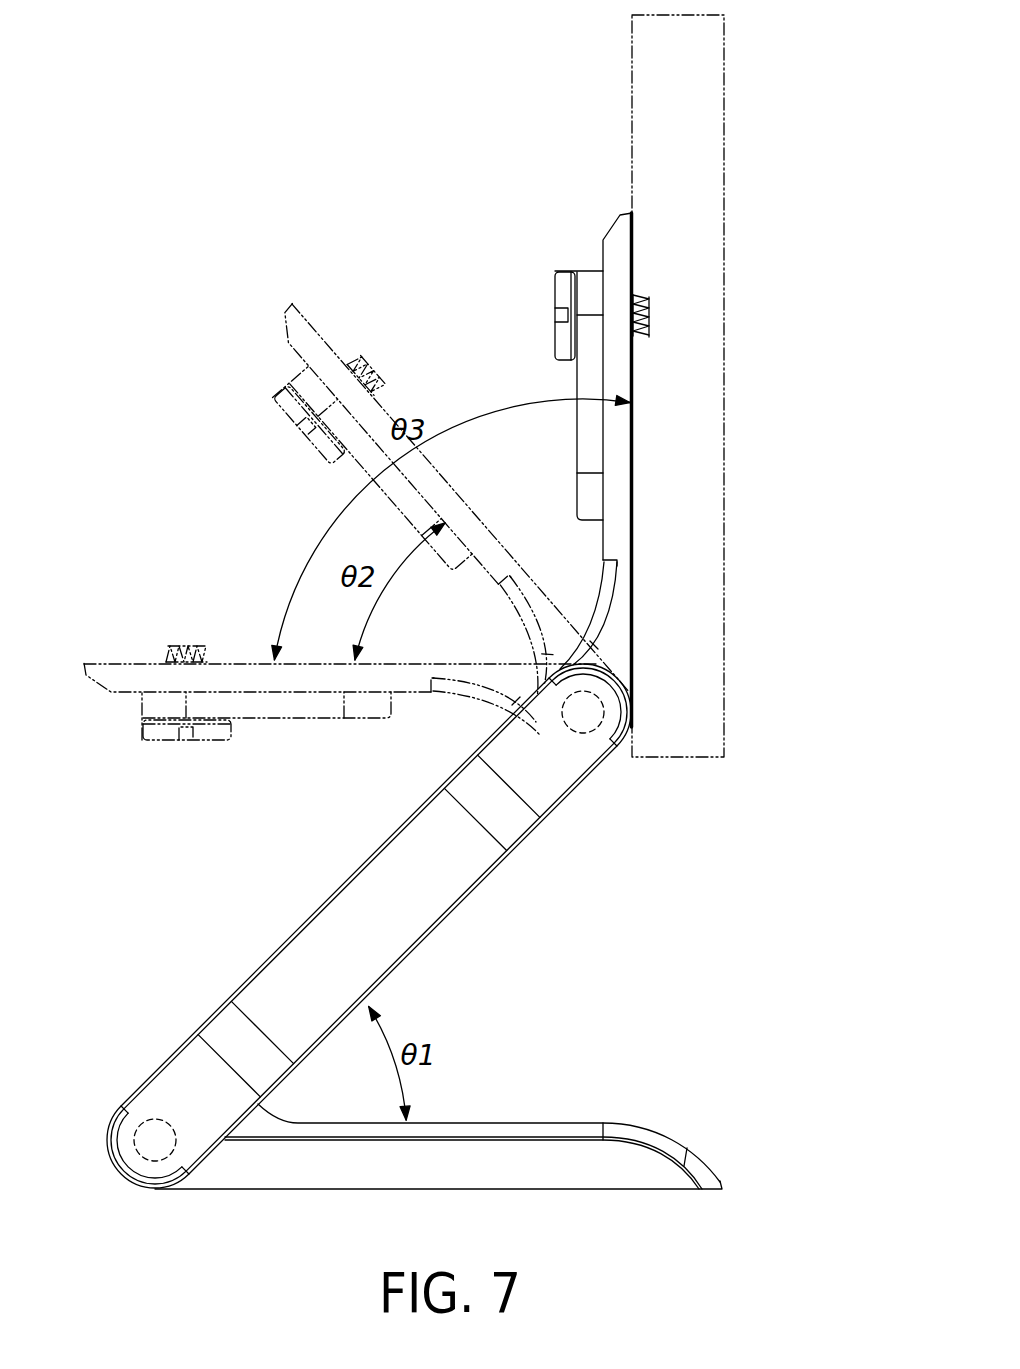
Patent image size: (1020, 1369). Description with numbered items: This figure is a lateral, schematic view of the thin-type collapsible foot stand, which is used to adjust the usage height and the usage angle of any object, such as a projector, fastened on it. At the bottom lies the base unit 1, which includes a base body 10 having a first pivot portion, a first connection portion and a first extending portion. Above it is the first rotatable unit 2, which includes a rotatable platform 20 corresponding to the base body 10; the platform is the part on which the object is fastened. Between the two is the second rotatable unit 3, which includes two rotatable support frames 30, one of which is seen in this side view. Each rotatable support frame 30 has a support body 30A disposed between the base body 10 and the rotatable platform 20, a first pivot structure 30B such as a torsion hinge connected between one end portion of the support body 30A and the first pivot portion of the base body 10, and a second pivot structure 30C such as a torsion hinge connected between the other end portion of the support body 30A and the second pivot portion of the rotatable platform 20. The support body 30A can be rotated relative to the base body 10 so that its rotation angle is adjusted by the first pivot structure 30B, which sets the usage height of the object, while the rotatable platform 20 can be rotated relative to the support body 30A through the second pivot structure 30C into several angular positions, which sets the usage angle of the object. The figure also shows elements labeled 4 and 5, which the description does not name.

The base unit 1 is at (543, 1058).
The base body 10 is at (568, 1160).
The first rotatable unit 2 is at (573, 152).
The rotatable platform 20 is at (617, 242).
The second rotatable unit 3 is at (298, 818).
The rotatable support frame 30 is at (338, 925).
The support body 30A is at (408, 893).
The first pivot structure 30B is at (153, 1133).
The second pivot structure 30C is at (579, 722).
The screw 4 is at (548, 274).
The display device 5 is at (727, 244).